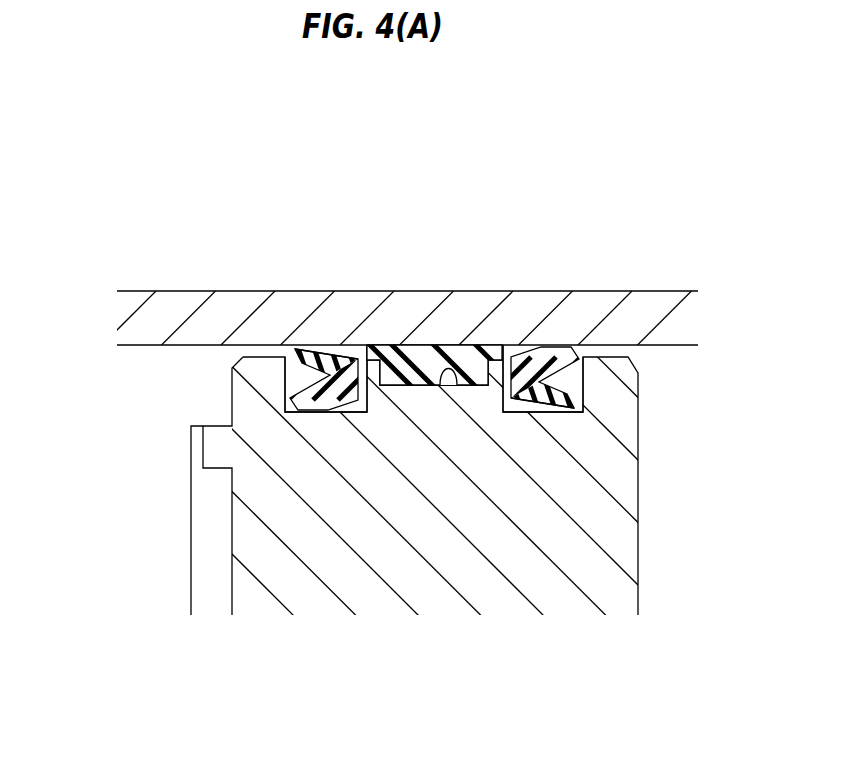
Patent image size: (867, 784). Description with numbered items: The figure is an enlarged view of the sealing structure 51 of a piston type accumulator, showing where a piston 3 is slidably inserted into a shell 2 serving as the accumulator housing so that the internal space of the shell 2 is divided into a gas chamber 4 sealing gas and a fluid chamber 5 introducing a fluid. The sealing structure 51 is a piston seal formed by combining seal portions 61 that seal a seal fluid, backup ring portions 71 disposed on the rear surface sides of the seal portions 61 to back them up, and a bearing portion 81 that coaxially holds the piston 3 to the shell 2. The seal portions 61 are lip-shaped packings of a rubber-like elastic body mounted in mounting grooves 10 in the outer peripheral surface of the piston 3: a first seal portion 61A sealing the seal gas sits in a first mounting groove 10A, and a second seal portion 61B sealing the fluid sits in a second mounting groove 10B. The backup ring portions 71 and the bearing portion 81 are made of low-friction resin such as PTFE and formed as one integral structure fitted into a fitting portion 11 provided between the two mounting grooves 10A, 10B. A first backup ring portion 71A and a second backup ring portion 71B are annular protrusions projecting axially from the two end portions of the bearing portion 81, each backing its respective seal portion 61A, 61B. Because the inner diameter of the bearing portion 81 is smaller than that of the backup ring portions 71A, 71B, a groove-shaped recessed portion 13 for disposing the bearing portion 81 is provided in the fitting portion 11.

The shell 2 is at (127, 318).
The piston 3 is at (257, 563).
The gas chamber 4 is at (60, 515).
The fluid chamber 5 is at (735, 516).
The mounting grooves 10 is at (416, 519).
The first mounting groove 10A is at (343, 413).
The second mounting groove 10B is at (530, 413).
The fitting portion 11 is at (423, 393).
The groove-shaped recessed portion 13 is at (458, 386).
The sealing structure 51 is at (296, 329).
The seal portions 61 is at (430, 303).
The first seal portion 61A is at (343, 372).
The second seal portion 61B is at (520, 360).
The backup ring portions 71 is at (434, 313).
The first backup ring portion 71A is at (377, 356).
The second backup ring portion 71B is at (499, 372).
The bearing portion 81 is at (432, 365).